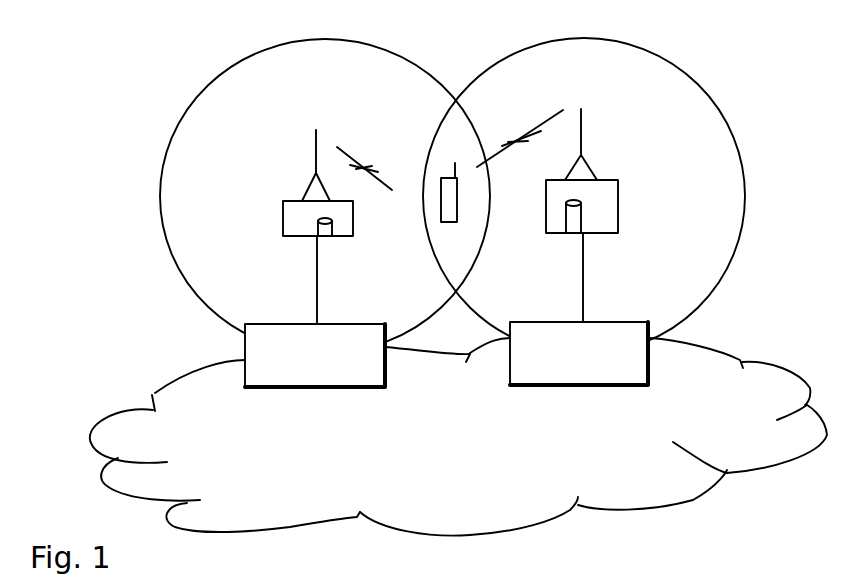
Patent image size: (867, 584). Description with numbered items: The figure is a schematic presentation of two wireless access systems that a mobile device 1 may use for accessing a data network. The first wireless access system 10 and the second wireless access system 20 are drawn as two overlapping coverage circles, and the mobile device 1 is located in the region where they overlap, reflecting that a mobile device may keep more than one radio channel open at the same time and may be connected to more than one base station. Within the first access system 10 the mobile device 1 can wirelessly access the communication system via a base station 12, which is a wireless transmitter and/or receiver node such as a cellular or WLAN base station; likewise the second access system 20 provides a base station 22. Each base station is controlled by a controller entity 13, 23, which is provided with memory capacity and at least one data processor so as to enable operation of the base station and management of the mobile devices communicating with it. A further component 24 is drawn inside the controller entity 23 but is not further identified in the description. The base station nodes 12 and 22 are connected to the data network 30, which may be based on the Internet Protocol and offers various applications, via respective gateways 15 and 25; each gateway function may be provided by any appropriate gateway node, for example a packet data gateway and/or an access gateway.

The mobile device 1 is at (432, 156).
The wireless access system 10 is at (223, 148).
The base station 12 is at (317, 167).
The controller entity 13 is at (298, 216).
The gateway 15 is at (243, 343).
The wireless access system 20 is at (685, 118).
The base station 22 is at (587, 140).
The controller entity 23 is at (587, 188).
The server unit of second access point 24 is at (587, 221).
The gateway 25 is at (617, 338).
The data network 30 is at (150, 395).